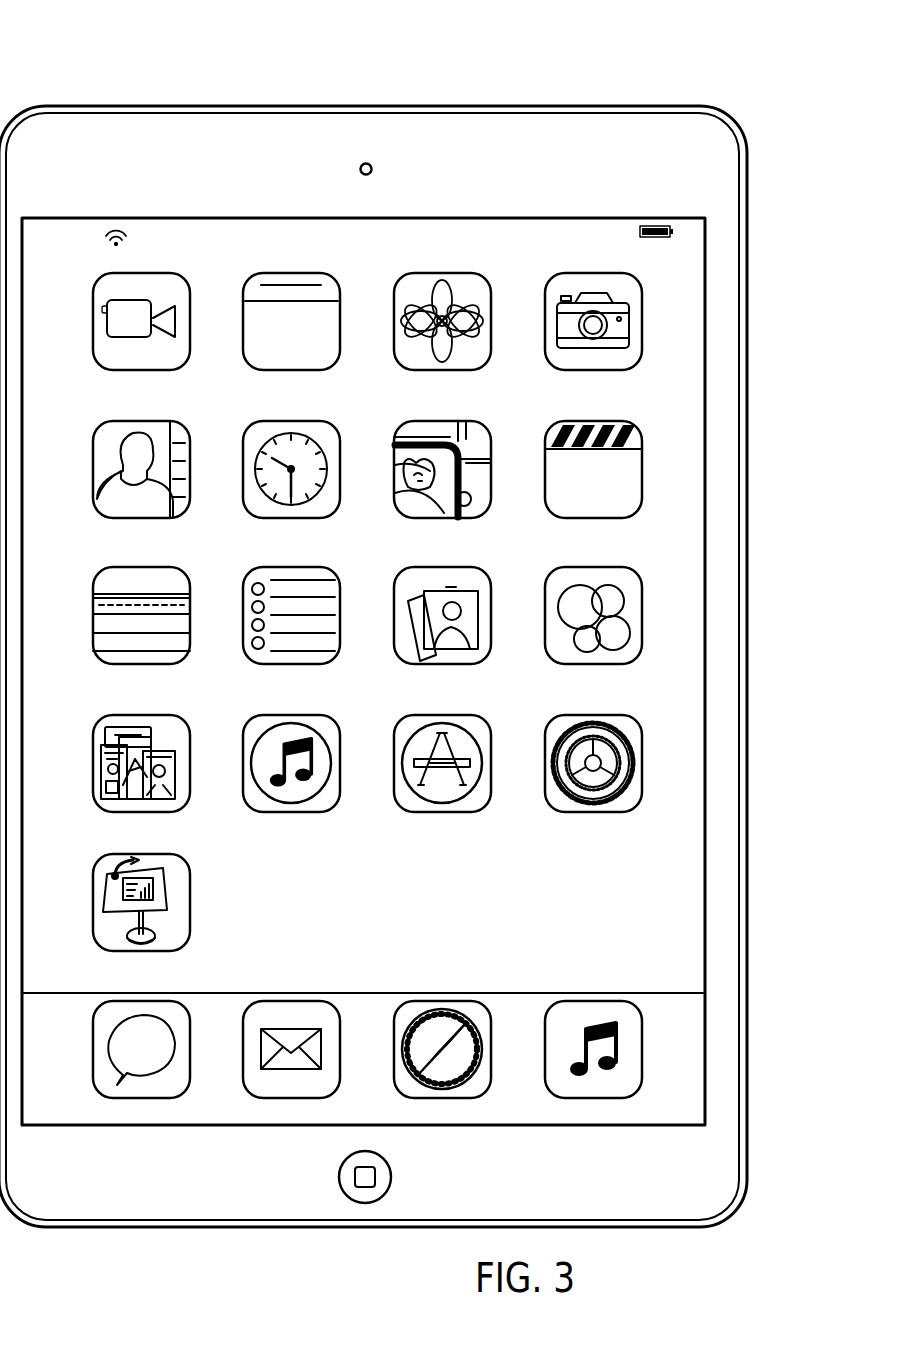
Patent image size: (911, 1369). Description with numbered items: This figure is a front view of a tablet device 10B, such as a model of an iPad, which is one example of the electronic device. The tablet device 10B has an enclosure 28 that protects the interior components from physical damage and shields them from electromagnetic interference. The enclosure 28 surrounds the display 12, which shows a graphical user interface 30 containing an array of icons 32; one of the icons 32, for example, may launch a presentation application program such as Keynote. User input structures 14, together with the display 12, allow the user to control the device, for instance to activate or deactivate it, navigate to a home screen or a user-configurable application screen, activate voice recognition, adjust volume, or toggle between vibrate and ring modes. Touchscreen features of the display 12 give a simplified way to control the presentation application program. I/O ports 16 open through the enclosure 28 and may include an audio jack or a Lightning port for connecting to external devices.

The tablet device 10B is at (112, 36).
The display 12 is at (706, 882).
The user input structures 14 is at (637, 105).
The I/O ports 16 is at (95, 107).
The enclosure 28 is at (748, 628).
The graphical user interface 30 is at (668, 842).
The icons 32 is at (190, 905).